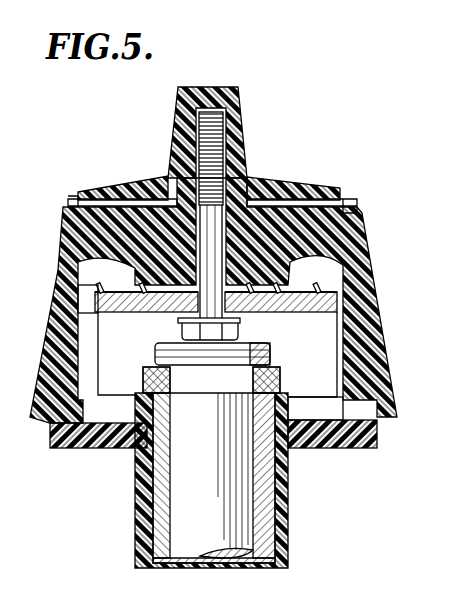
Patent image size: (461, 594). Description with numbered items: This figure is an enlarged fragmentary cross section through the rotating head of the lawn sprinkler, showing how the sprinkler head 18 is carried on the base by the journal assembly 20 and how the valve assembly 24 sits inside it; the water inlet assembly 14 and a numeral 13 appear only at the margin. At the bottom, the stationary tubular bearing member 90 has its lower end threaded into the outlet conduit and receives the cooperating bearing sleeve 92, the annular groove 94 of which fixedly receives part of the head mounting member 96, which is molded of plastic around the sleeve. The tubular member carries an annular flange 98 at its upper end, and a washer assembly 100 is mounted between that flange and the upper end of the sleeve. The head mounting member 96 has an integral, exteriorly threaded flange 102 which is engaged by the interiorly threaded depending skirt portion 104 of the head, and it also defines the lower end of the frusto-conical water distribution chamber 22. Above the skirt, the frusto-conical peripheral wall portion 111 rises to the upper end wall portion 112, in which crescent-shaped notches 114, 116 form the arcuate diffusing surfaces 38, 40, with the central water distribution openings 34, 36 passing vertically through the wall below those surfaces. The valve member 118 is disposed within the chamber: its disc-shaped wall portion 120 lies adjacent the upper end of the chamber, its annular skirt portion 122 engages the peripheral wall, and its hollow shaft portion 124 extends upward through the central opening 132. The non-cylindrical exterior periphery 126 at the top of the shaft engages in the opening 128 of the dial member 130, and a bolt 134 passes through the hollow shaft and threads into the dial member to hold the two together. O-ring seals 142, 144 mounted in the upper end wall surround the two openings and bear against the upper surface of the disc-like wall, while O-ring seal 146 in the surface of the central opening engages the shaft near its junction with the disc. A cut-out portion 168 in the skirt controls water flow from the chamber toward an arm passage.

The dial member 130 is at (241, 104).
The bolt 134 is at (205, 158).
The O-ring seal 146 is at (250, 305).
The non-cylindrical exterior periphery 126 is at (245, 183).
The opening 132 is at (297, 184).
The upper end wall portion 112 is at (69, 197).
The hollow shaft portion 124 is at (90, 236).
The peripheral wall portion 111 is at (373, 342).
The O-ring seal 142 is at (143, 306).
The O-ring seal 144 is at (315, 296).
The disc-shaped wall portion 120 is at (97, 313).
The flange 102 is at (84, 440).
The skirt portion 104 is at (372, 432).
The annular groove 94 is at (272, 478).
The bearing sleeve 92 is at (157, 535).
The tubular bearing member 90 is at (233, 520).
The journal assembly 20 is at (131, 526).
The head mounting member 96 is at (306, 432).
The washer assembly 100 is at (277, 380).
The annular flange 98 is at (268, 353).
The opening 128 is at (183, 187).
The valve assembly 24 is at (251, 172).
The sprinkler head 18 is at (314, 165).
The diffusing surface 40 is at (343, 226).
The central water distribution opening 36 is at (305, 249).
The crescent-shaped notch 116 is at (345, 264).
The water distribution chamber 22 is at (385, 385).
The water inlet assembly 14 is at (429, 295).
The base 13 is at (419, 384).
The diffusing surface 38 is at (72, 223).
The central water distribution opening 34 is at (68, 260).
The crescent-shaped notch 114 is at (58, 266).
The notch or cut-out portion 168 is at (60, 313).
The valve member 118 is at (45, 338).
The annular skirt portion 122 is at (48, 380).